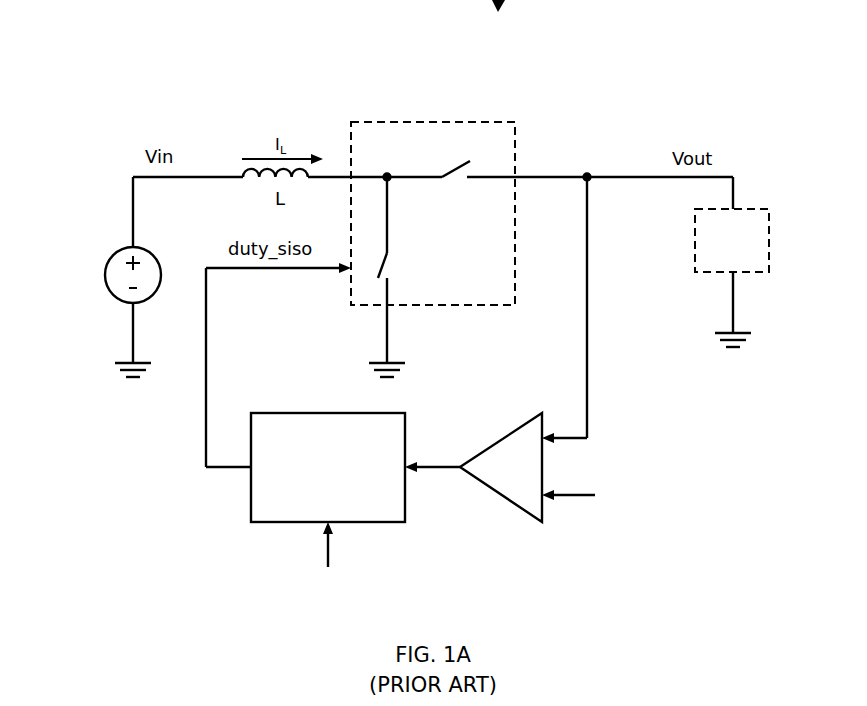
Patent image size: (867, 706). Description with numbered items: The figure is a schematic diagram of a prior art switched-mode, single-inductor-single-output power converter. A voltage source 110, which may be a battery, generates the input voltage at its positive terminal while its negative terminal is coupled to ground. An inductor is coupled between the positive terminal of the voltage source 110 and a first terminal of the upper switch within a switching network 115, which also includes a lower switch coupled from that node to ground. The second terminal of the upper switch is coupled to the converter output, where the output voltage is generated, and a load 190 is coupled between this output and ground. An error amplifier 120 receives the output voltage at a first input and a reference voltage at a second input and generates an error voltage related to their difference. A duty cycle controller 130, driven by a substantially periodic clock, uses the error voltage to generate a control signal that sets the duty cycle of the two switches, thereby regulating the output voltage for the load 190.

The voltage source 110 is at (127, 247).
The switching network 115 is at (421, 121).
The error amplifier 120 is at (517, 430).
The duty cycle controller 130 is at (311, 507).
The load 190 is at (750, 267).